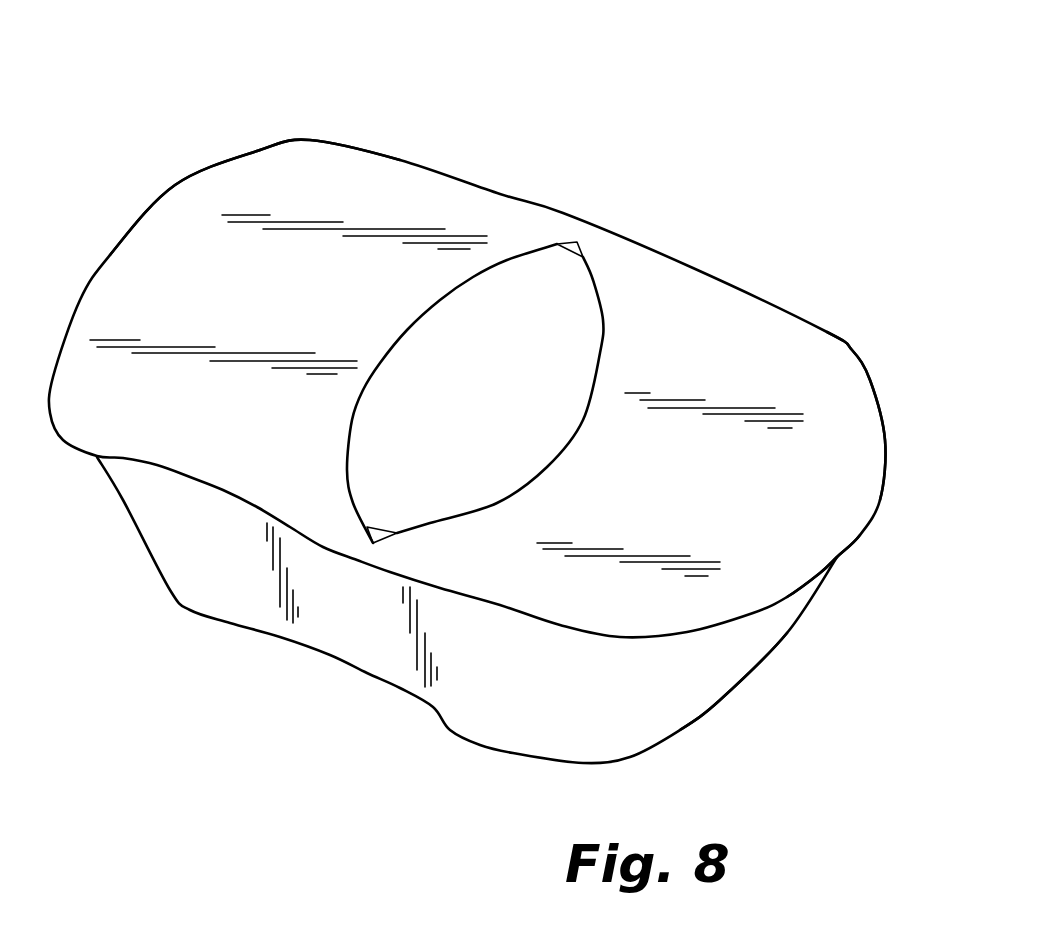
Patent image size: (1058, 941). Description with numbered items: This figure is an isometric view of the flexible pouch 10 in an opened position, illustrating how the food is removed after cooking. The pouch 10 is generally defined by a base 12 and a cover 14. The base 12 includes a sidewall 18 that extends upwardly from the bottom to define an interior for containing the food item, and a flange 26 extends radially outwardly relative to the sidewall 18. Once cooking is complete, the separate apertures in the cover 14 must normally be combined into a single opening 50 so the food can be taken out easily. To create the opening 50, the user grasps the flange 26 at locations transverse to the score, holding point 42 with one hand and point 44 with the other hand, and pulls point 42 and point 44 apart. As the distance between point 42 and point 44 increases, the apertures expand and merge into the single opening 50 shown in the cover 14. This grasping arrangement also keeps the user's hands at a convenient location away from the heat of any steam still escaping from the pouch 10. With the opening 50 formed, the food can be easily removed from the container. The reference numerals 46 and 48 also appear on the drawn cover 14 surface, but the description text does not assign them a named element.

The flexible pouch 10 is at (207, 130).
The base 12 is at (178, 533).
The cover 14 is at (190, 403).
The sidewall 18 is at (640, 700).
The flange 26 is at (877, 443).
The point 42 is at (817, 537).
The point 44 is at (197, 225).
The second top surface region 46 is at (687, 390).
The top surface region 48 is at (310, 183).
The opening 50 is at (533, 277).